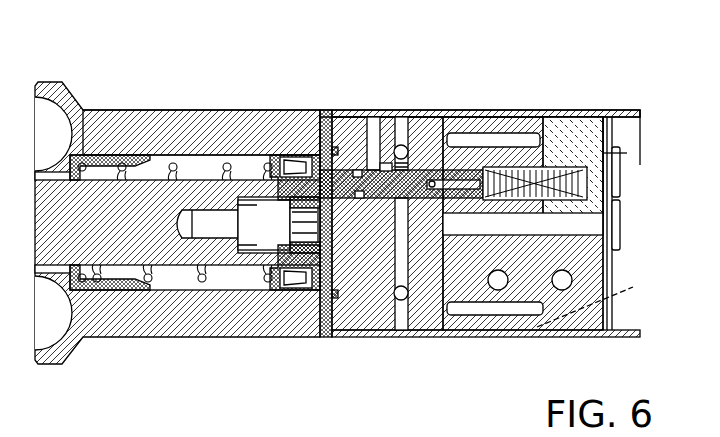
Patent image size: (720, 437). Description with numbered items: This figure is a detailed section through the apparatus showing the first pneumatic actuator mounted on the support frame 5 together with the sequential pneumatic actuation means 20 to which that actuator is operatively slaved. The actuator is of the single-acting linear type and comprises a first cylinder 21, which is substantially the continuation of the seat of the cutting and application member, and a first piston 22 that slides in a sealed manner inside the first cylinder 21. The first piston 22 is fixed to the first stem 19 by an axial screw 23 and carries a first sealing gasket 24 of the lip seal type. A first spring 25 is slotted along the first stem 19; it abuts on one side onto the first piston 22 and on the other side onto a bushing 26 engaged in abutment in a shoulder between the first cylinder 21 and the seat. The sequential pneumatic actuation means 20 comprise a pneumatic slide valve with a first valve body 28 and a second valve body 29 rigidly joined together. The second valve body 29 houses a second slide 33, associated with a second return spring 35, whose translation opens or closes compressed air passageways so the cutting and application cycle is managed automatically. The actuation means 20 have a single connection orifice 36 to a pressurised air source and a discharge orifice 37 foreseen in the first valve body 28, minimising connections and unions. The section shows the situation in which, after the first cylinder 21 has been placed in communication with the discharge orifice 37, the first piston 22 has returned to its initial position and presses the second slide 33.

The support frame 5 is at (257, 100).
The first stem 19 is at (122, 292).
The sequential pneumatic actuation means 20 is at (486, 350).
The first cylinder 21 is at (185, 282).
The first piston 22 is at (277, 172).
The axial screw 23 is at (262, 222).
The first sealing gasket 24 is at (312, 300).
The first spring 25 is at (188, 176).
The bushing 26 is at (122, 232).
The first valve body 28 is at (586, 156).
The second valve body 29 is at (367, 317).
The second slide 33 is at (398, 140).
The second return spring 35 is at (512, 150).
The connection orifice 36 is at (618, 180).
The discharge orifice 37 is at (622, 226).